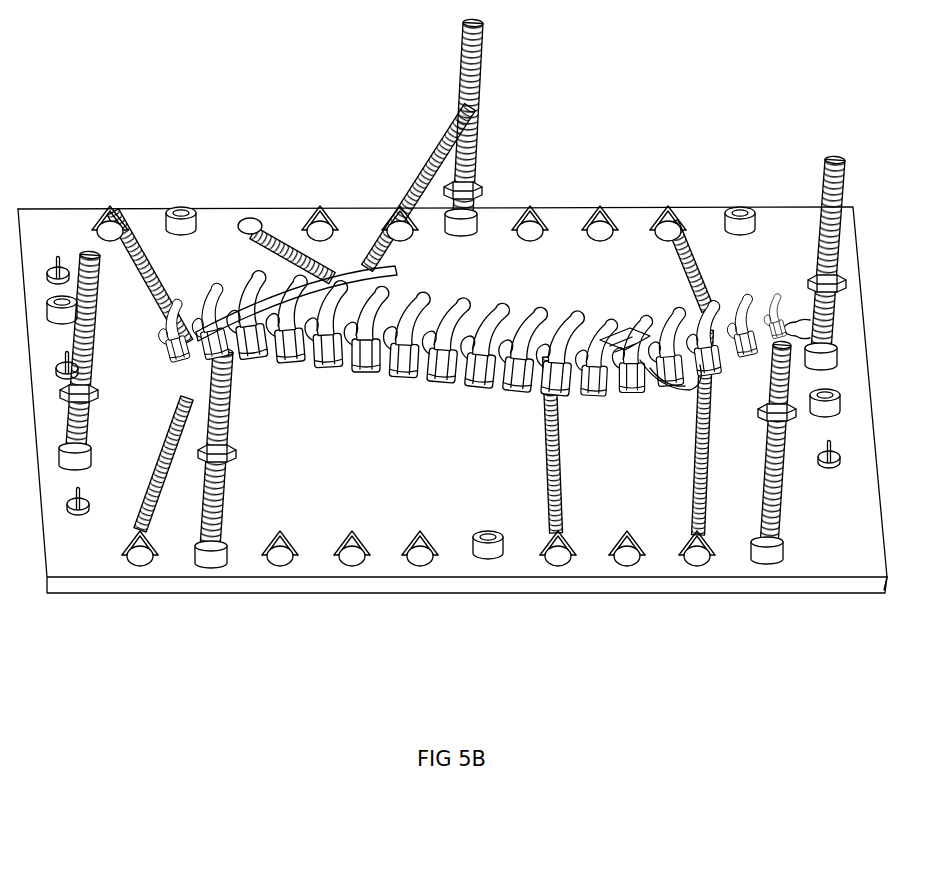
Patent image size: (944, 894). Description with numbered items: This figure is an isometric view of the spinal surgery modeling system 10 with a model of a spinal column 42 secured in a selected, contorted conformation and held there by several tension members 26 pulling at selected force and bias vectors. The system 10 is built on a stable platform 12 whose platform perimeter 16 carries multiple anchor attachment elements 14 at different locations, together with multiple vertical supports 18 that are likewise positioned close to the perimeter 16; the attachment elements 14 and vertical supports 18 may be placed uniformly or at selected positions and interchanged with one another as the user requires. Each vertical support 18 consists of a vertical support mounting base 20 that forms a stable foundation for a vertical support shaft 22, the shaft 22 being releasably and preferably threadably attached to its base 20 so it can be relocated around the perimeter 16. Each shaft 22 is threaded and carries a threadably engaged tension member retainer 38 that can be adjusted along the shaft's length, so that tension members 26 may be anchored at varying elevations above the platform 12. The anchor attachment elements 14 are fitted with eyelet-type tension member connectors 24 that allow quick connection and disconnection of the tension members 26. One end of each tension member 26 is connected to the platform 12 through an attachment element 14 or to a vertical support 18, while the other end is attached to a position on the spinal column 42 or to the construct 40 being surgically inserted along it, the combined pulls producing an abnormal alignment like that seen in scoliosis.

The spinal surgery modeling system 10 is at (689, 144).
The platform 12 is at (98, 553).
The anchor attachment elements 14 is at (352, 553).
The platform perimeter 16 is at (808, 520).
The vertical supports 18 is at (482, 57).
The vertical support mounting base 20 is at (191, 208).
The vertical support shaft 22 is at (477, 102).
The tension member connector 24 is at (323, 205).
The tension member 26 is at (413, 187).
The tension member retainer 38 is at (481, 186).
The construct 40 is at (540, 337).
The spinal column 42 is at (382, 327).